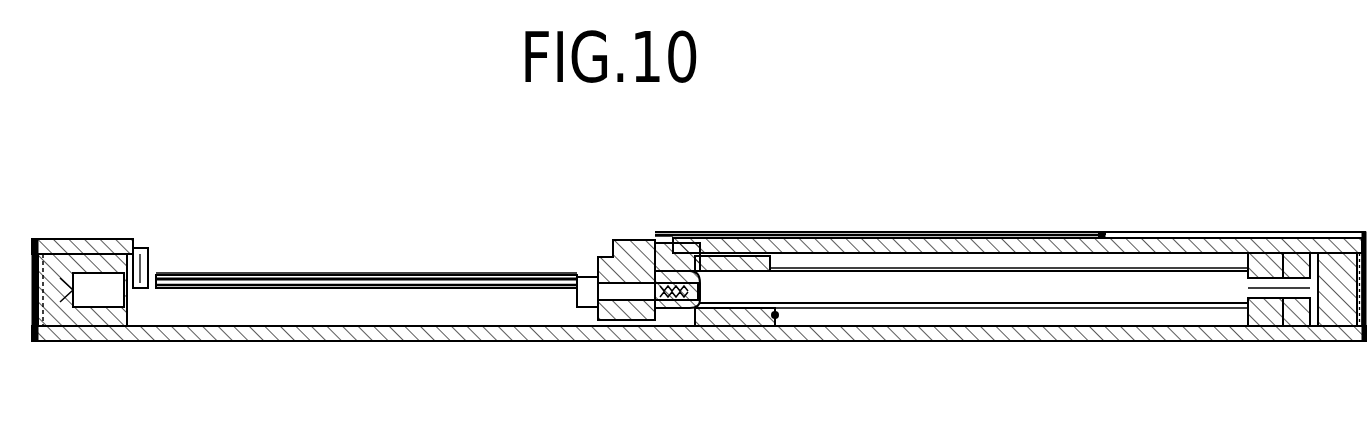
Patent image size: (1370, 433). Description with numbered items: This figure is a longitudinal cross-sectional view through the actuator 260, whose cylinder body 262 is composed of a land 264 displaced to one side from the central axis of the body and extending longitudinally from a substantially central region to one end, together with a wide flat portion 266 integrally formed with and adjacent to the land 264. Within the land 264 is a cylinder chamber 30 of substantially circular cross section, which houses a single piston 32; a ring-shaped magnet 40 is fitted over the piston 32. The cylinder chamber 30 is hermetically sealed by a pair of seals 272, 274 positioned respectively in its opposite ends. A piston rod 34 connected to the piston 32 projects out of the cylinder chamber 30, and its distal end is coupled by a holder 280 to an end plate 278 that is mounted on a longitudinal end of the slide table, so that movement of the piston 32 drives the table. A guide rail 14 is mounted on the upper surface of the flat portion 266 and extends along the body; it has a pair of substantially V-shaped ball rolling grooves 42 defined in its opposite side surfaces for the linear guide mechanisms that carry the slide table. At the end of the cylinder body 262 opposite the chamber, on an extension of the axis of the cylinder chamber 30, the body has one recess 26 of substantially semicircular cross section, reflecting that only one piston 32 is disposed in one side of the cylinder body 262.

The guide rail 14 is at (468, 275).
The recess 26 is at (268, 315).
The cylinder chamber 30 is at (944, 322).
The piston 32 is at (1311, 328).
The piston rod 34 is at (1052, 290).
The ring-shaped magnet 40 is at (1270, 328).
The ball rolling grooves 42 is at (378, 292).
The actuator 260 is at (1073, 114).
The cylinder body 262 is at (505, 341).
The land 264 is at (1132, 235).
The flat portion 266 is at (258, 274).
The seal 272 is at (710, 322).
The seal 274 is at (1327, 326).
The end plate 278 is at (630, 240).
The holder 280 is at (603, 322).